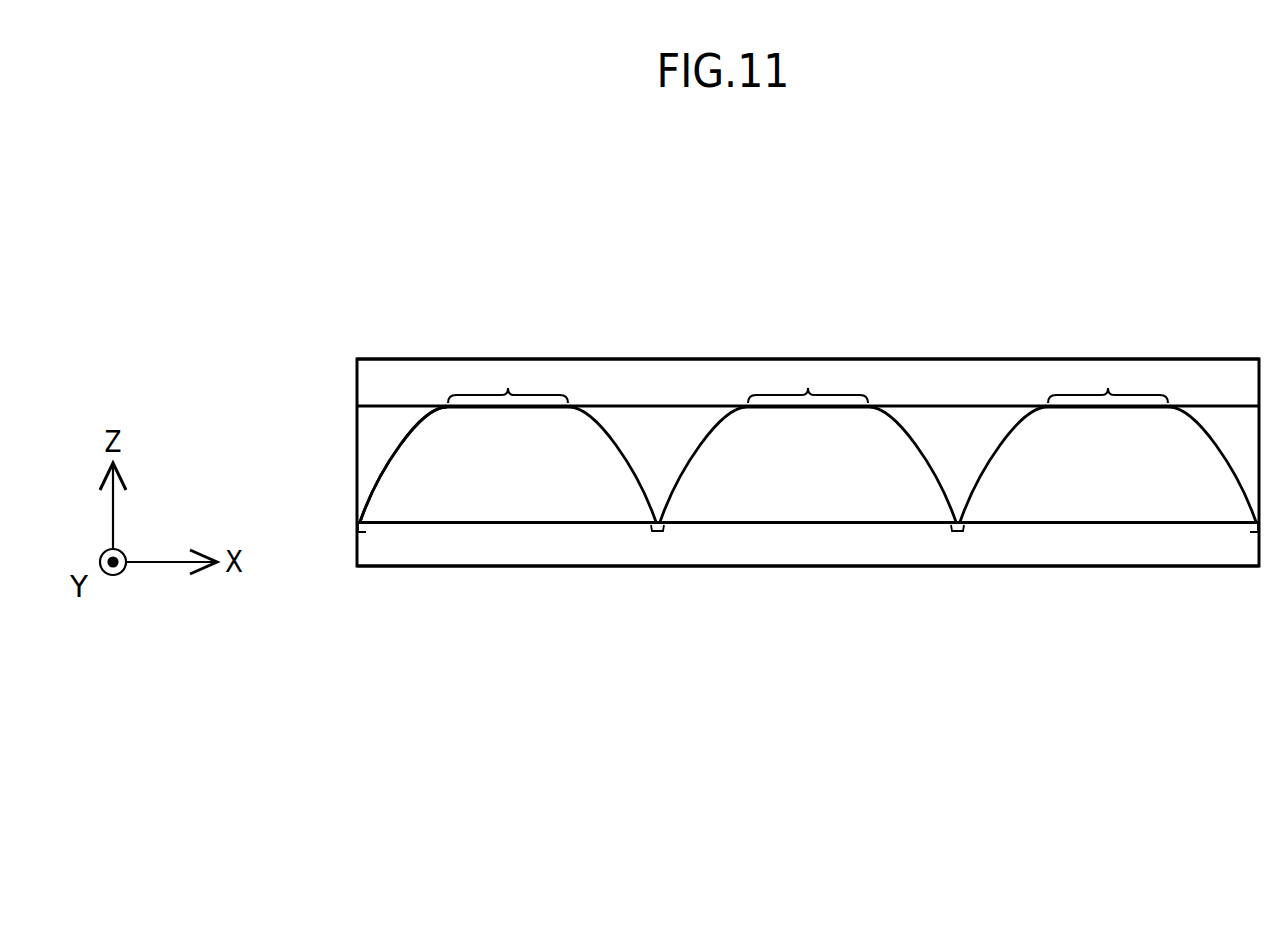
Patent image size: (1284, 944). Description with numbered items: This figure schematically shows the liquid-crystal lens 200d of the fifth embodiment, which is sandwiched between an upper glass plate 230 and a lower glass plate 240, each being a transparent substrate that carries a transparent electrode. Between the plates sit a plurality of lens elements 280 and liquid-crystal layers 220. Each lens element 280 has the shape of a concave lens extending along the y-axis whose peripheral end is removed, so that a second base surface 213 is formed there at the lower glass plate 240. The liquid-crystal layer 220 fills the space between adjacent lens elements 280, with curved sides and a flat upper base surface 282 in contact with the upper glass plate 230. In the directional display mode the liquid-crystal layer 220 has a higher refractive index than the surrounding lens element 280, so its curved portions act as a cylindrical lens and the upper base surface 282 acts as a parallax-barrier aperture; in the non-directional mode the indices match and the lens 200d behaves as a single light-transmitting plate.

The liquid-crystal lens 200d is at (1133, 218).
The upper glass plate 230 is at (355, 387).
The lower glass plate 240 is at (355, 551).
The liquid-crystal layer 220 is at (487, 490).
The lens element 280 is at (378, 428).
The upper base surface 282 is at (508, 390).
The second base surface 213 is at (360, 533).